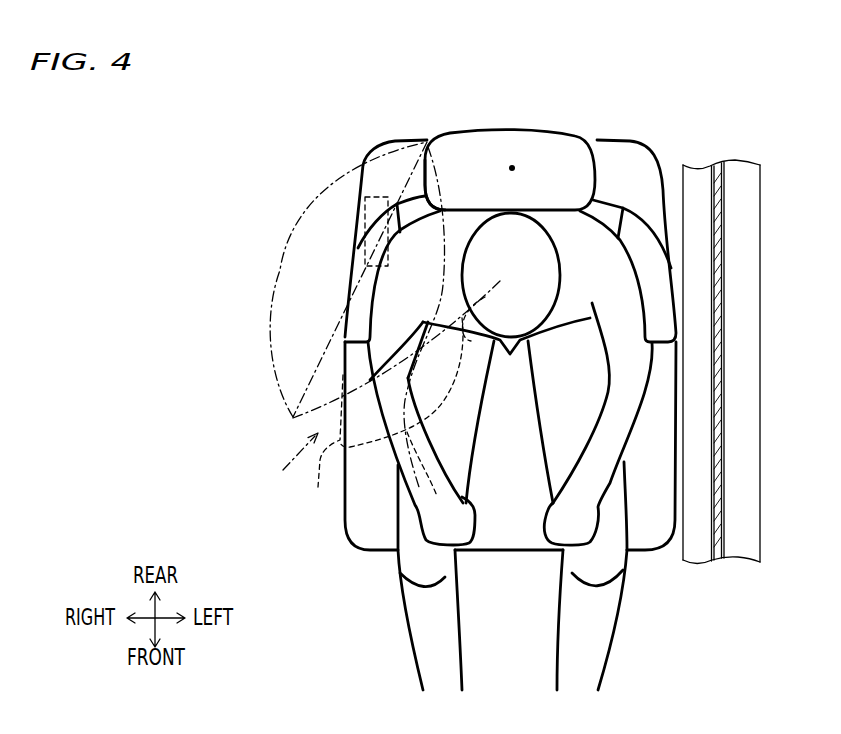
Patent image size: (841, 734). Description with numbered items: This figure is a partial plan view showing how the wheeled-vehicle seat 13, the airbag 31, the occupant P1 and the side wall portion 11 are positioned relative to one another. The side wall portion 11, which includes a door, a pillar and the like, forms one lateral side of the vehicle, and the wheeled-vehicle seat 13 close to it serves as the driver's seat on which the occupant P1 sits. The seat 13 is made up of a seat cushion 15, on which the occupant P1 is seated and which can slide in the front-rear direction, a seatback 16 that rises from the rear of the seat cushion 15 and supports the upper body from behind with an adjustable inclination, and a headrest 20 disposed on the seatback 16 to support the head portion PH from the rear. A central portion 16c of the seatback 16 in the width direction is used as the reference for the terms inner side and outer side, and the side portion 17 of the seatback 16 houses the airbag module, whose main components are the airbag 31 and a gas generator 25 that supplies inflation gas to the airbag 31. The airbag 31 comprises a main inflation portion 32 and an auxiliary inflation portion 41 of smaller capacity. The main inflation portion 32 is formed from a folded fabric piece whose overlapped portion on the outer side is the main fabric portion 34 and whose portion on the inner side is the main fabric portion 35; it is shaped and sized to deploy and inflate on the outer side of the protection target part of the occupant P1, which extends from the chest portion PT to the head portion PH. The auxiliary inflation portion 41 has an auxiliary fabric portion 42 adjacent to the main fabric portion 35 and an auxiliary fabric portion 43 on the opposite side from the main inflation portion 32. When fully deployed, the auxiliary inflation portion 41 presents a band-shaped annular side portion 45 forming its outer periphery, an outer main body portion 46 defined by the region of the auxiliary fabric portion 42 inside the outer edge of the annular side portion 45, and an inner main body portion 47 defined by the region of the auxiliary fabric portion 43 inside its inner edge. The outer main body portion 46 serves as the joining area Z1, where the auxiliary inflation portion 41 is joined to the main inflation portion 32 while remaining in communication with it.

The side wall portion 11 is at (742, 167).
The wheeled-vehicle seat 13 is at (615, 145).
The seat cushion 15 is at (512, 551).
The seatback 16 is at (510, 325).
The central portion 16c is at (511, 166).
The side portion 17 is at (350, 274).
The headrest 20 is at (543, 138).
The gas generator 25 is at (364, 222).
The airbag 31 is at (293, 468).
The main inflation portion 32 is at (330, 188).
The main fabric portion 34 is at (385, 268).
The main fabric portion 35 is at (447, 198).
The auxiliary inflation portion 41 is at (440, 410).
The auxiliary fabric portion 42 is at (323, 445).
The auxiliary fabric portion 43 is at (435, 389).
The annular side portion 45 is at (487, 335).
The outer main body portion 46 is at (416, 318).
The joining area Z1 is at (392, 352).
The inner main body portion 47 is at (432, 477).
The head portion PH is at (552, 277).
The chest portion PT is at (567, 332).
The occupant P1 is at (640, 292).